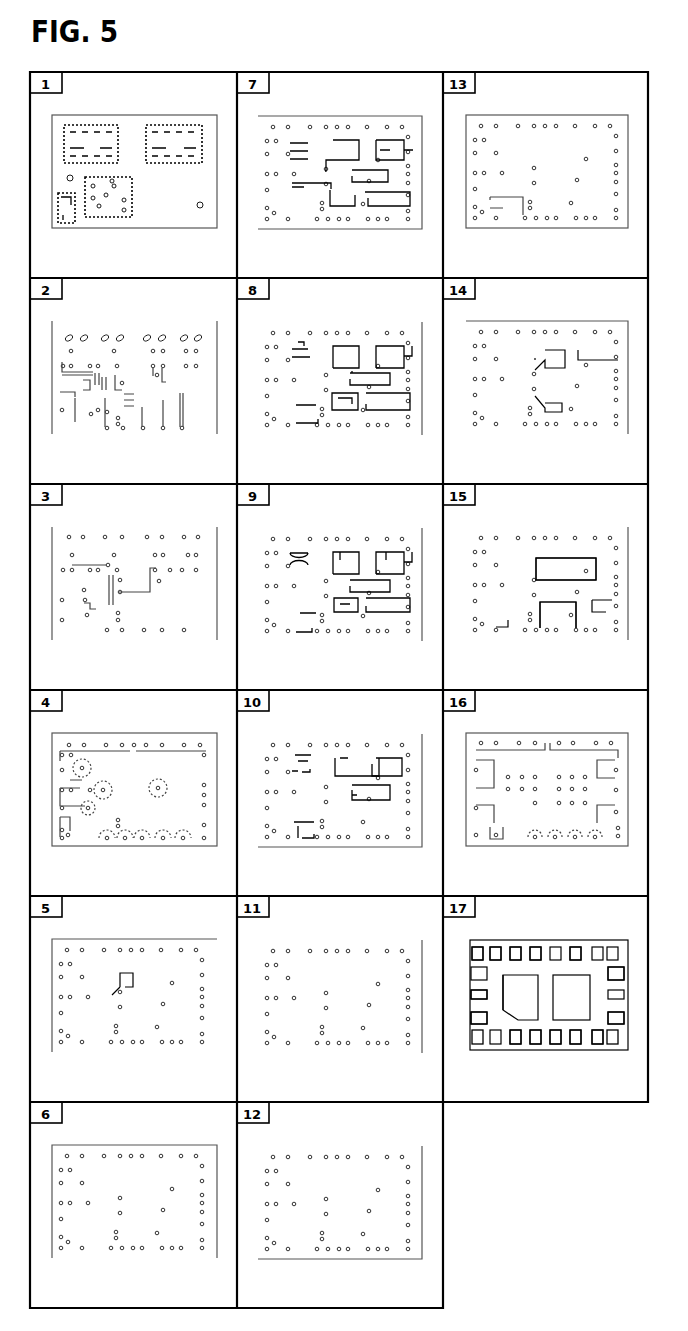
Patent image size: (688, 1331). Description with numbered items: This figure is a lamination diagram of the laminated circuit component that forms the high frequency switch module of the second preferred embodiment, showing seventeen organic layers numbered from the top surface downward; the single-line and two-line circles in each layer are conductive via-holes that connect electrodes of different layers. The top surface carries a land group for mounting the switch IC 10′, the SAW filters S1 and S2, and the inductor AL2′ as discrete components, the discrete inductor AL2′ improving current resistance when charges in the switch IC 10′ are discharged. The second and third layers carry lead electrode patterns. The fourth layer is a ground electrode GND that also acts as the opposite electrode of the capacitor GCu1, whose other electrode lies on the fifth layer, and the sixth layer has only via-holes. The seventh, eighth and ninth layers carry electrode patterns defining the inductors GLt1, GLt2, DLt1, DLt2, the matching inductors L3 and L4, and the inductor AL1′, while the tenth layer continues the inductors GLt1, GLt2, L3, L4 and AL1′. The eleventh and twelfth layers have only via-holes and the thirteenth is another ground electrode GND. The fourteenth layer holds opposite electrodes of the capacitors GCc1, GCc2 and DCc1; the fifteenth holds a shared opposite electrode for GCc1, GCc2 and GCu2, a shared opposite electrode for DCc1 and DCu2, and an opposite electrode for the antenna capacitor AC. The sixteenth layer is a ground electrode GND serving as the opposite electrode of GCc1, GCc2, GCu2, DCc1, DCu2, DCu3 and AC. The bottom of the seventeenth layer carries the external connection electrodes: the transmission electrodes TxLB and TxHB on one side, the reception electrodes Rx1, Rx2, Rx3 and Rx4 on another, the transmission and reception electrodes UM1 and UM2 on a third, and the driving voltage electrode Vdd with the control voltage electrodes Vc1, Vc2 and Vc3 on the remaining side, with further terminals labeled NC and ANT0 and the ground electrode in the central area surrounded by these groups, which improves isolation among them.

The SAW filter S1 is at (92, 123).
The SAW filter S2 is at (172, 123).
The switch IC 10′ is at (125, 175).
The inductor AL2′ is at (70, 224).
The inductor AL1′ is at (312, 214).
The matching inductor L3 is at (392, 172).
The matching inductor L4 is at (293, 141).
The inductor GLt1 is at (346, 138).
The inductor GLt2 is at (384, 138).
The inductor DLt1 is at (336, 208).
The inductor DLt2 is at (394, 208).
The ground electrode GND is at (166, 750).
The capacitor GCu1 is at (132, 973).
The capacitor GCu2 is at (566, 569).
The capacitor GCc1 is at (552, 350).
The capacitor GCc2 is at (586, 350).
The capacitor DCc1 is at (553, 414).
The capacitor DCu2 is at (558, 615).
The capacitor DCu3 is at (603, 614).
The antenna capacitor AC is at (506, 630).
The transmission and reception external electrode UM1 is at (472, 954).
The transmission and reception external electrode UM2 is at (474, 1024).
The reception external electrode Rx1 is at (578, 946).
The reception external electrode Rx2 is at (538, 946).
The reception external electrode Rx3 is at (516, 946).
The reception external electrode Rx4 is at (494, 946).
The transmission external electrode TxLB is at (616, 966).
The transmission external electrode TxHB is at (620, 1026).
The no-connection terminal NC is at (472, 995).
The antenna terminal ANT0 is at (504, 1004).
The control voltage input external electrode Vc1 is at (536, 1046).
The control voltage input external electrode Vc2 is at (556, 1046).
The control voltage input external electrode Vc3 is at (576, 1046).
The driving voltage input external electrode Vdd is at (596, 1046).